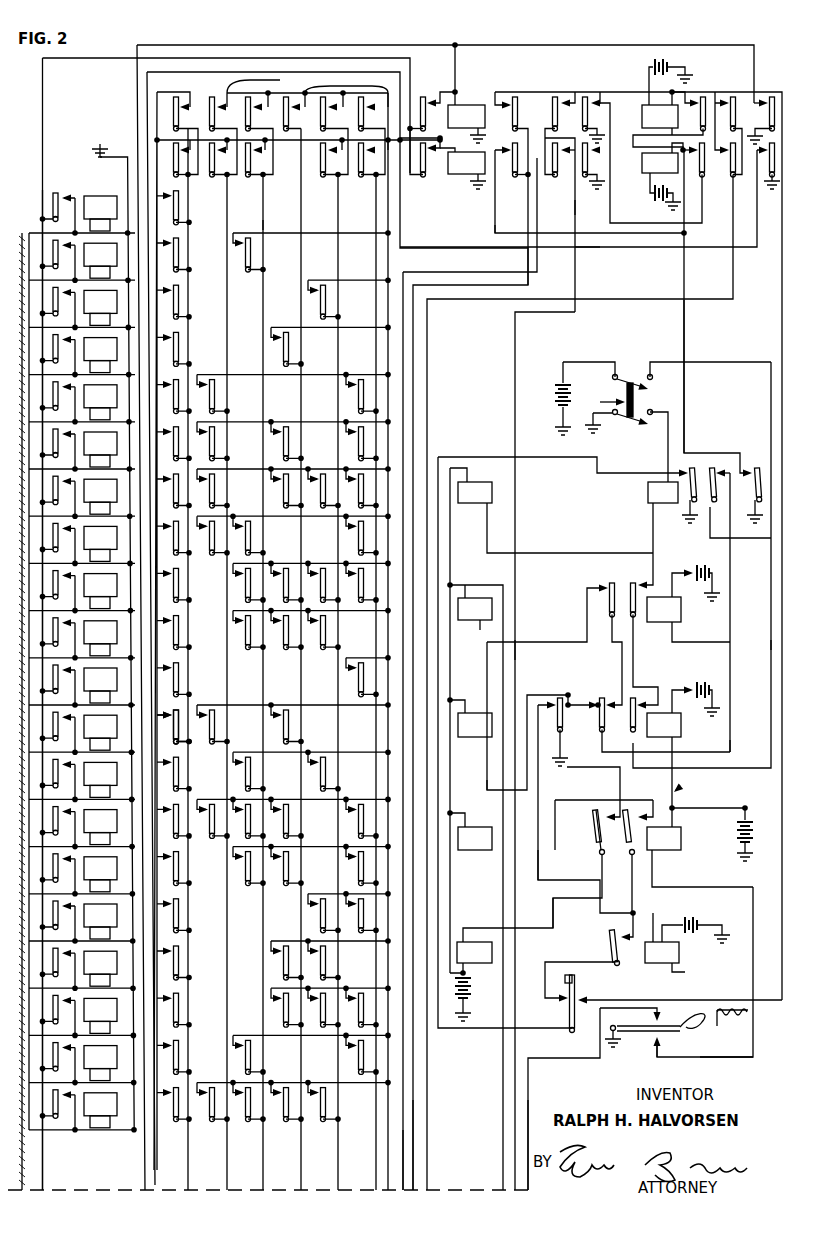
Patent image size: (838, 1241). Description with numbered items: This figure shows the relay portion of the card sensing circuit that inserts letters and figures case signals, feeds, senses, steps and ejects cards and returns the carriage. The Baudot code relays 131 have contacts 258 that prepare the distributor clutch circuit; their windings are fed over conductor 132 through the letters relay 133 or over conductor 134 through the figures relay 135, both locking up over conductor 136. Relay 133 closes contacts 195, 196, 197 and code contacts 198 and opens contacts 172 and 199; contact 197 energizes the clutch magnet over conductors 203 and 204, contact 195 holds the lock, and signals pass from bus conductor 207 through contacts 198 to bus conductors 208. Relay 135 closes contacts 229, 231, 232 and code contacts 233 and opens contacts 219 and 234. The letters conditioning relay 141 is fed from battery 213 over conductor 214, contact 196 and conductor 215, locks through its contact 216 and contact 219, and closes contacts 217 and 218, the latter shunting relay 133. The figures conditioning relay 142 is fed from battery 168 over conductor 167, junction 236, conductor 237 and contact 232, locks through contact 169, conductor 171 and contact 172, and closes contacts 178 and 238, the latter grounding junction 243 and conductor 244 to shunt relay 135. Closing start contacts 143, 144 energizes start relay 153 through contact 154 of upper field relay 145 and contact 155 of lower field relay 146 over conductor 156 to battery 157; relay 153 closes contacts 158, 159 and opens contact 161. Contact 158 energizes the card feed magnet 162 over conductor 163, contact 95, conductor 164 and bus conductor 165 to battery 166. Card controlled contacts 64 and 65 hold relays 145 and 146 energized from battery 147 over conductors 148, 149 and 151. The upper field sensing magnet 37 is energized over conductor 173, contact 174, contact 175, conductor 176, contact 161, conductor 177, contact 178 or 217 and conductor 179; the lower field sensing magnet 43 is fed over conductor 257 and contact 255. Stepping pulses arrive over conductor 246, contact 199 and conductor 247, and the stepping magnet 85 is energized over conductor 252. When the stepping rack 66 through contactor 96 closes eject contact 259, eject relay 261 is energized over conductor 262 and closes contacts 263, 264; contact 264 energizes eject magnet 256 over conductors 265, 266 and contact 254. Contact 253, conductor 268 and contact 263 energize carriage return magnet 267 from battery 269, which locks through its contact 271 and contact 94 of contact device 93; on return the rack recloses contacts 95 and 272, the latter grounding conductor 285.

The conductor 136 is at (55, 60).
The conductor 134 is at (210, 72).
The conductor 132 is at (397, 45).
The Baudot code relays 131 is at (100, 1132).
The contact of figures relay 229 is at (156, 140).
The conductor 203 is at (168, 1162).
The conductor 204 is at (178, 306).
The contacts of code relays 258 is at (185, 710).
The contact of letters relay 197 is at (188, 90).
The code contacts of letters relay 198 is at (299, 125).
The code contacts of figures relay 233 is at (252, 165).
The junction 243 is at (330, 165).
The bus conductors 208 is at (338, 175).
The conductor 214 is at (575, 92).
The contact of letters relay 195 is at (425, 97).
The letters relay 133 is at (464, 105).
The contact of figures relay 231 is at (425, 170).
The figures relay 135 is at (462, 174).
The contact of letters relay 196 is at (510, 95).
The contact of figures relay 232 is at (515, 177).
The conductor 237 is at (495, 233).
The contact of letters relay 199 is at (562, 97).
The contact of figures relay 234 is at (557, 175).
The conductor 171 is at (598, 210).
The contact of letters relay 172 is at (597, 97).
The contact of figures relay 219 is at (630, 162).
The letters conditioning relay 141 is at (640, 105).
The grounded battery 213 is at (668, 62).
The contact of letters conditioning relay 216 is at (704, 95).
The contact of letters conditioning relay 217 is at (735, 88).
The contact of letters conditioning relay 218 is at (765, 95).
The contact of figures conditioning relay 169 is at (702, 210).
The contact of figures conditioning relay 178 is at (716, 165).
The conductor 179 is at (733, 278).
The contact of figures conditioning relay 238 is at (757, 210).
The grounded battery 168 is at (653, 202).
The figures conditioning relay 142 is at (609, 299).
The junction 236 is at (685, 240).
The conductor 244 is at (603, 250).
The conductor 215 is at (503, 273).
The conductor 247 is at (515, 347).
The conductor 167 is at (687, 348).
The grounded battery 157 is at (562, 383).
The start switch contact 143 is at (650, 381).
The start switch contact 144 is at (652, 420).
The conductor 177 is at (771, 393).
The conductor 163 is at (503, 456).
The card feed magnet 162 is at (472, 482).
The contact of start relay 158 is at (693, 468).
The contact of start relay 161 is at (714, 470).
The contact of start relay 159 is at (745, 470).
The start relay 153 is at (650, 502).
The bus conductor 165 is at (450, 585).
The stepping magnet 85 is at (480, 630).
The conductor 252 is at (507, 615).
The contact of upper field relay 174 is at (605, 583).
The contact of upper field relay 154 is at (640, 572).
The card controlled contact 64 is at (694, 576).
The upper field relay 145 is at (681, 612).
The conductor 176 is at (730, 593).
The conductor 156 is at (771, 645).
The card controlled contact 65 is at (683, 683).
The conductor 173 is at (520, 648).
The contact of lower field relay 253 is at (568, 680).
The upper field sensing magnet 37 is at (478, 708).
The contact of lower field relay 254 is at (555, 695).
The contact of lower field relay 175 is at (609, 697).
The contact of lower field relay 155 is at (640, 700).
The lower field relay 146 is at (681, 728).
The conductor 148 is at (730, 745).
The conductor 257 is at (493, 786).
The contact of lower field relay 255 is at (597, 707).
The conductor 268 is at (590, 767).
The contact of eject relay 263 is at (595, 812).
The contact of eject relay 264 is at (650, 805).
The conductor 151 is at (692, 782).
The conductor 149 is at (731, 810).
The battery 147 is at (740, 845).
The eject relay 261 is at (665, 868).
The conductor 164 is at (772, 892).
The lower field sensing magnet 43 is at (462, 850).
The conductor 266 is at (562, 867).
The conductor 265 is at (553, 910).
The eject magnet 256 is at (468, 942).
The grounded battery 166 is at (458, 1015).
The locking contact 271 is at (608, 930).
The battery 269 is at (690, 925).
The carriage return magnet 267 is at (682, 962).
The contact 93 is at (575, 993).
The contact 94 is at (568, 1000).
The contact 95 is at (586, 998).
The contact 272 is at (648, 1030).
The contactor 96 is at (692, 1026).
The stepping rack 66 is at (722, 1032).
The eject contact 259 is at (660, 1047).
The conductor 285 is at (528, 1088).
The conductor 262 is at (725, 1060).
The conductor 246 is at (415, 1117).
The bus conductor 207 is at (405, 1152).